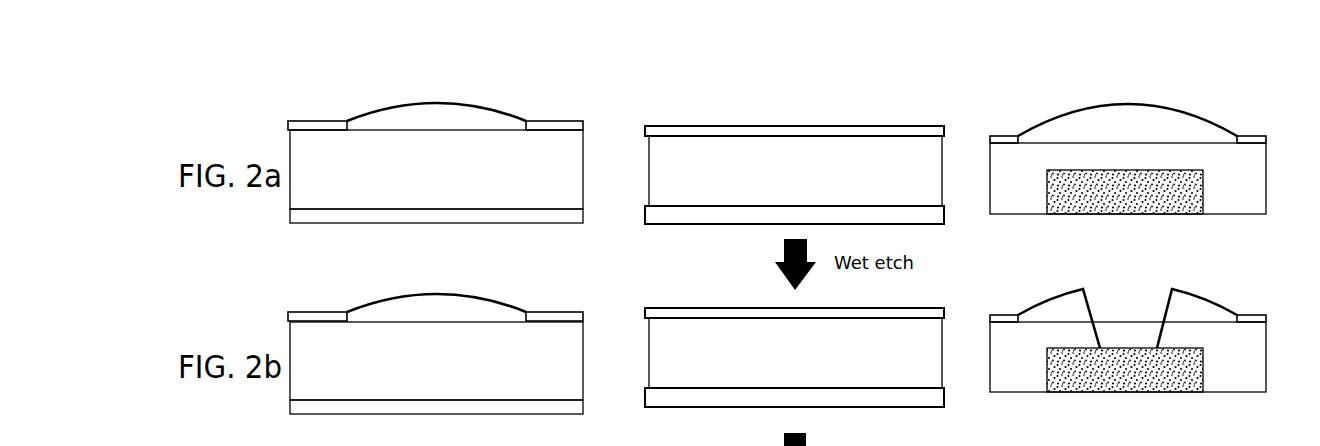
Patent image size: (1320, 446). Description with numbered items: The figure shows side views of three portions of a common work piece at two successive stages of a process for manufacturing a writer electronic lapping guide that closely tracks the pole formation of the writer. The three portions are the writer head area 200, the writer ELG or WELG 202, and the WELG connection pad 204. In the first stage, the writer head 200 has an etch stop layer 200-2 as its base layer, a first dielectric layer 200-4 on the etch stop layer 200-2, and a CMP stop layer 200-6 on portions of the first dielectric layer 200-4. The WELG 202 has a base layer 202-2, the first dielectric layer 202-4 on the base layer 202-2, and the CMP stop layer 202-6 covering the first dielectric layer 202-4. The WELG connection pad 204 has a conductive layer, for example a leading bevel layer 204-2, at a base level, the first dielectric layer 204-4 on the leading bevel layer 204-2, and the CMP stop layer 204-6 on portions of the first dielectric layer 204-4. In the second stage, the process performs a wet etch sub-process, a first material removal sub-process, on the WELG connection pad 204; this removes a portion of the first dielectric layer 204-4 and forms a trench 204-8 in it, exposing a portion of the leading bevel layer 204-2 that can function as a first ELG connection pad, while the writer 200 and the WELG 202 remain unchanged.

In FIG. 2A, the writer head area 200 is at (463, 63).
In FIG. 2B, the writer head area 200 is at (434, 362).
In FIG. 2A, the etch stop layer 200-2 is at (465, 216).
In FIG. 2B, the etch stop layer 200-2 is at (466, 405).
In FIG. 2A, the first dielectric layer 200-4 is at (443, 176).
In FIG. 2B, the first dielectric layer 200-4 is at (452, 364).
In FIG. 2A, the CMP stop layer 200-6 is at (312, 127).
In FIG. 2B, the CMP stop layer 200-6 is at (311, 320).
In FIG. 2A, the writer electronic lapping guide (WELG) 202 is at (868, 59).
In FIG. 2B, the writer electronic lapping guide (WELG) 202 is at (794, 357).
In FIG. 2A, the base layer 202-2 is at (693, 215).
In FIG. 2B, the base layer 202-2 is at (700, 395).
In FIG. 2A, the first dielectric layer 202-4 is at (822, 183).
In FIG. 2B, the first dielectric layer 202-4 is at (812, 366).
In FIG. 2A, the CMP stop layer 202-6 is at (665, 133).
In FIG. 2B, the CMP stop layer 202-6 is at (733, 315).
In FIG. 2A, the WELG connection pad 204 is at (1235, 61).
In FIG. 2B, the WELG connection pad 204 is at (1123, 339).
In FIG. 2A, the conductive layer (leading bevel layer) 204-2 is at (1086, 212).
In FIG. 2B, the conductive layer (leading bevel layer) 204-2 is at (1088, 390).
In FIG. 2A, the first dielectric layer 204-4 is at (1128, 158).
In FIG. 2B, the first dielectric layer 204-4 is at (1222, 337).
In FIG. 2A, the CMP stop layer 204-6 is at (998, 138).
In FIG. 2B, the CMP stop layer 204-6 is at (1000, 317).
In FIG. 2B, the trench 204-8 is at (1136, 302).